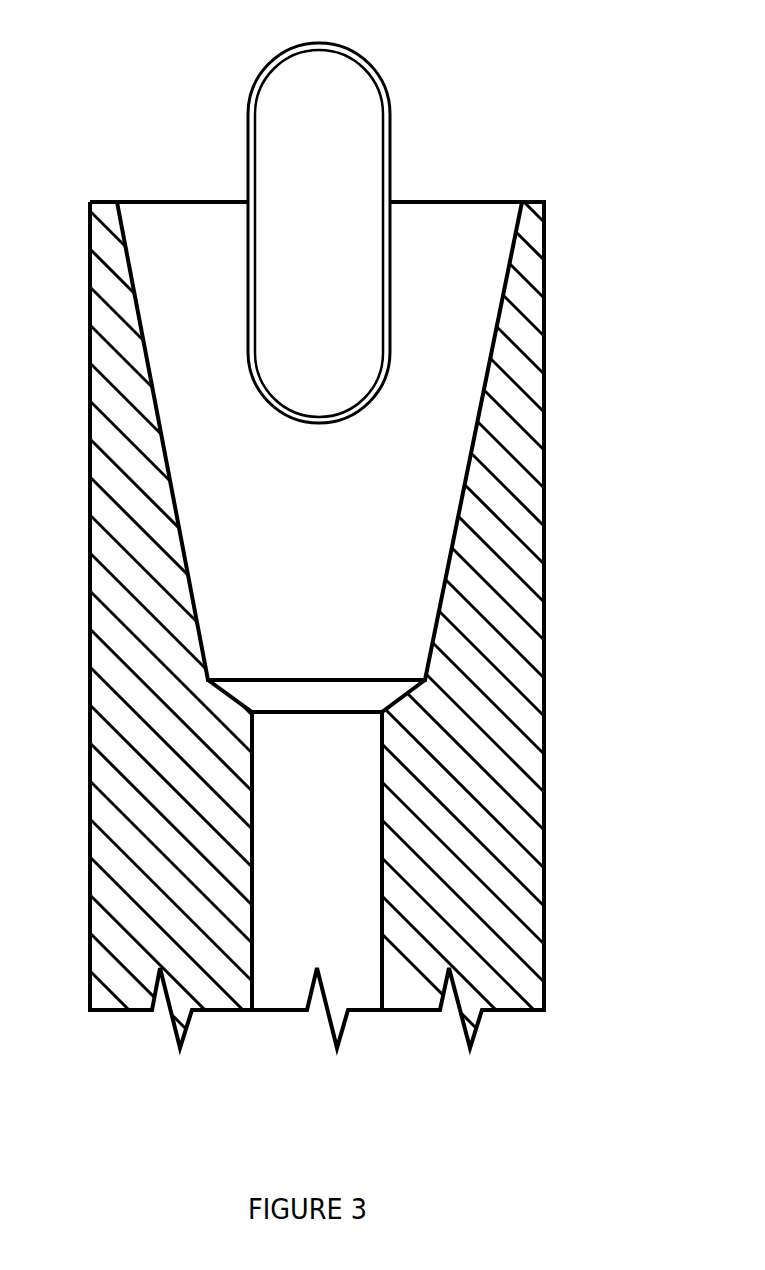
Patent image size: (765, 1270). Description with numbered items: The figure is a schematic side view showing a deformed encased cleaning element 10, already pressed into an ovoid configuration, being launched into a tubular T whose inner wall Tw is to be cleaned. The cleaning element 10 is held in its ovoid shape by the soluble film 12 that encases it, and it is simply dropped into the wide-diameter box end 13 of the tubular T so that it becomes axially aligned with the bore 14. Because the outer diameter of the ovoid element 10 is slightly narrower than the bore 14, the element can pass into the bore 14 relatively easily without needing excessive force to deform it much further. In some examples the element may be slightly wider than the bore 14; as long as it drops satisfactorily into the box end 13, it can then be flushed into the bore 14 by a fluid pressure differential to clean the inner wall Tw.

The deformed encased cleaning element 10 is at (382, 635).
The film 12 is at (348, 48).
The box end 13 is at (392, 551).
The bore 14 is at (312, 871).
The tubular T is at (382, 635).
The inner wall Tw is at (385, 928).